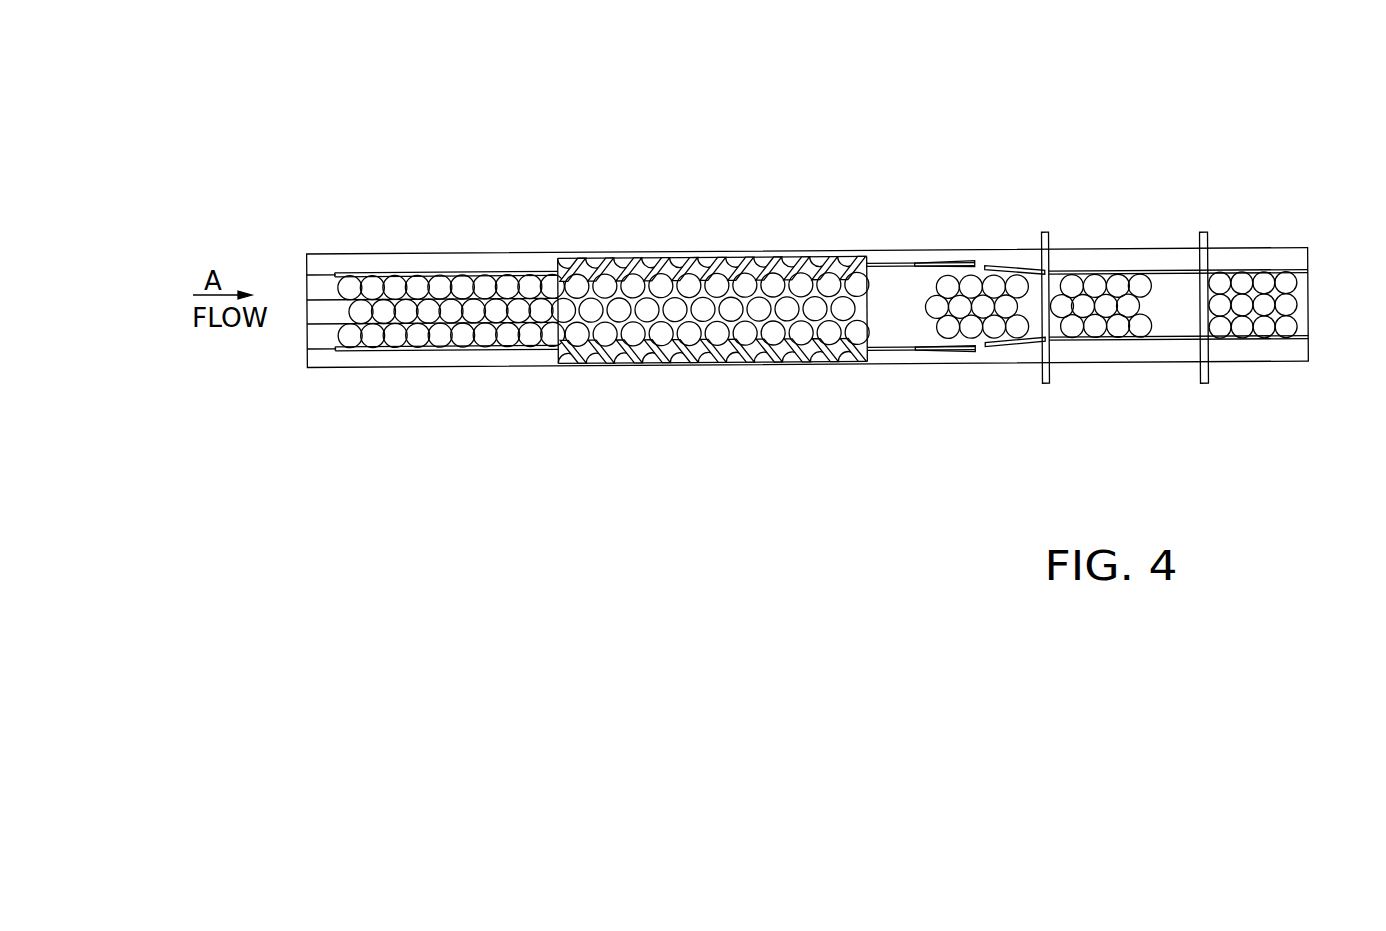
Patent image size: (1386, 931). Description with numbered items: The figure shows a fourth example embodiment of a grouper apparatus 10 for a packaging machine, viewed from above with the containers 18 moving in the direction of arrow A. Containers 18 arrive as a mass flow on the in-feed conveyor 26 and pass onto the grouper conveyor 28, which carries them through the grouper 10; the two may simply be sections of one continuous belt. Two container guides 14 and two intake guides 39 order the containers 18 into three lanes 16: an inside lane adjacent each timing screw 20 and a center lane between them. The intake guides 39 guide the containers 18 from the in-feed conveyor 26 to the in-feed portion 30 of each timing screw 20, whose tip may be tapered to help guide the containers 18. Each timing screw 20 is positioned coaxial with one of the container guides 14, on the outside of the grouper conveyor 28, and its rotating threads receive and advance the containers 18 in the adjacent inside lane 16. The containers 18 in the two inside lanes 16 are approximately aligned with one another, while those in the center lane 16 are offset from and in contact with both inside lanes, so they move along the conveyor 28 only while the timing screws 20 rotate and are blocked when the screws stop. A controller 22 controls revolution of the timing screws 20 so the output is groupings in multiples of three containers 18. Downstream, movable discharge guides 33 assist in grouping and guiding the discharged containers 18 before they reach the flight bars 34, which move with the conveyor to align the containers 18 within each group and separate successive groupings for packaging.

The grouper apparatus 10 is at (812, 98).
The container guides 14 is at (438, 275).
The lanes 16 is at (508, 298).
The containers 18 is at (350, 288).
The timing screws 20 is at (647, 265).
The controller 22 is at (729, 365).
The in-feed conveyor 26 is at (317, 292).
The grouper conveyor 28 is at (892, 288).
The in-feed portion 30 is at (555, 280).
The movable discharge guides 33 is at (962, 265).
The flight bars 34 is at (1049, 233).
The intake guides 39 is at (472, 277).